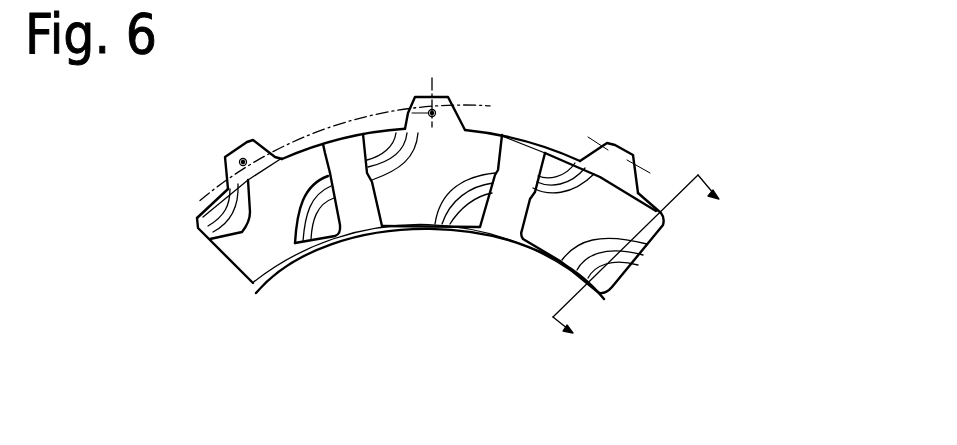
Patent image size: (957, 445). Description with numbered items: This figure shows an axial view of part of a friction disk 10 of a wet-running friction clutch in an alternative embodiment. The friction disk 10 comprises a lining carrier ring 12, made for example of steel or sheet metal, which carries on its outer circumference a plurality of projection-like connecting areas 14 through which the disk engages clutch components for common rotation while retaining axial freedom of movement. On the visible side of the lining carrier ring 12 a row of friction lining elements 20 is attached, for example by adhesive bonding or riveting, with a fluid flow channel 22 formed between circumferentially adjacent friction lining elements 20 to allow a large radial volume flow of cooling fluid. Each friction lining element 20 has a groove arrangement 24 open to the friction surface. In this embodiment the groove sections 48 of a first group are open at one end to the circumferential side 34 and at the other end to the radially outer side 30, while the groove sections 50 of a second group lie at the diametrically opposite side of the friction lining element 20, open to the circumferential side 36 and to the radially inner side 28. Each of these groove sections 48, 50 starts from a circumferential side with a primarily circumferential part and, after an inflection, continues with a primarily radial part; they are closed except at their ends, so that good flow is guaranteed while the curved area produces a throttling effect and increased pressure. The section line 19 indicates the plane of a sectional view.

The friction disk 10 is at (623, 75).
The lining carrier ring 12 is at (513, 180).
The connecting areas 14 is at (626, 150).
The section line 19 is at (659, 277).
The friction lining element 20 is at (298, 167).
The fluid flow channel 22 is at (355, 190).
The groove arrangement 24 is at (221, 250).
The radially inner side 28 is at (288, 268).
The radially outer side 30 is at (246, 158).
The circumferential side 34 is at (243, 278).
The circumferential side 36 is at (342, 218).
The groove sections 48 is at (238, 227).
The groove sections 50 is at (323, 231).